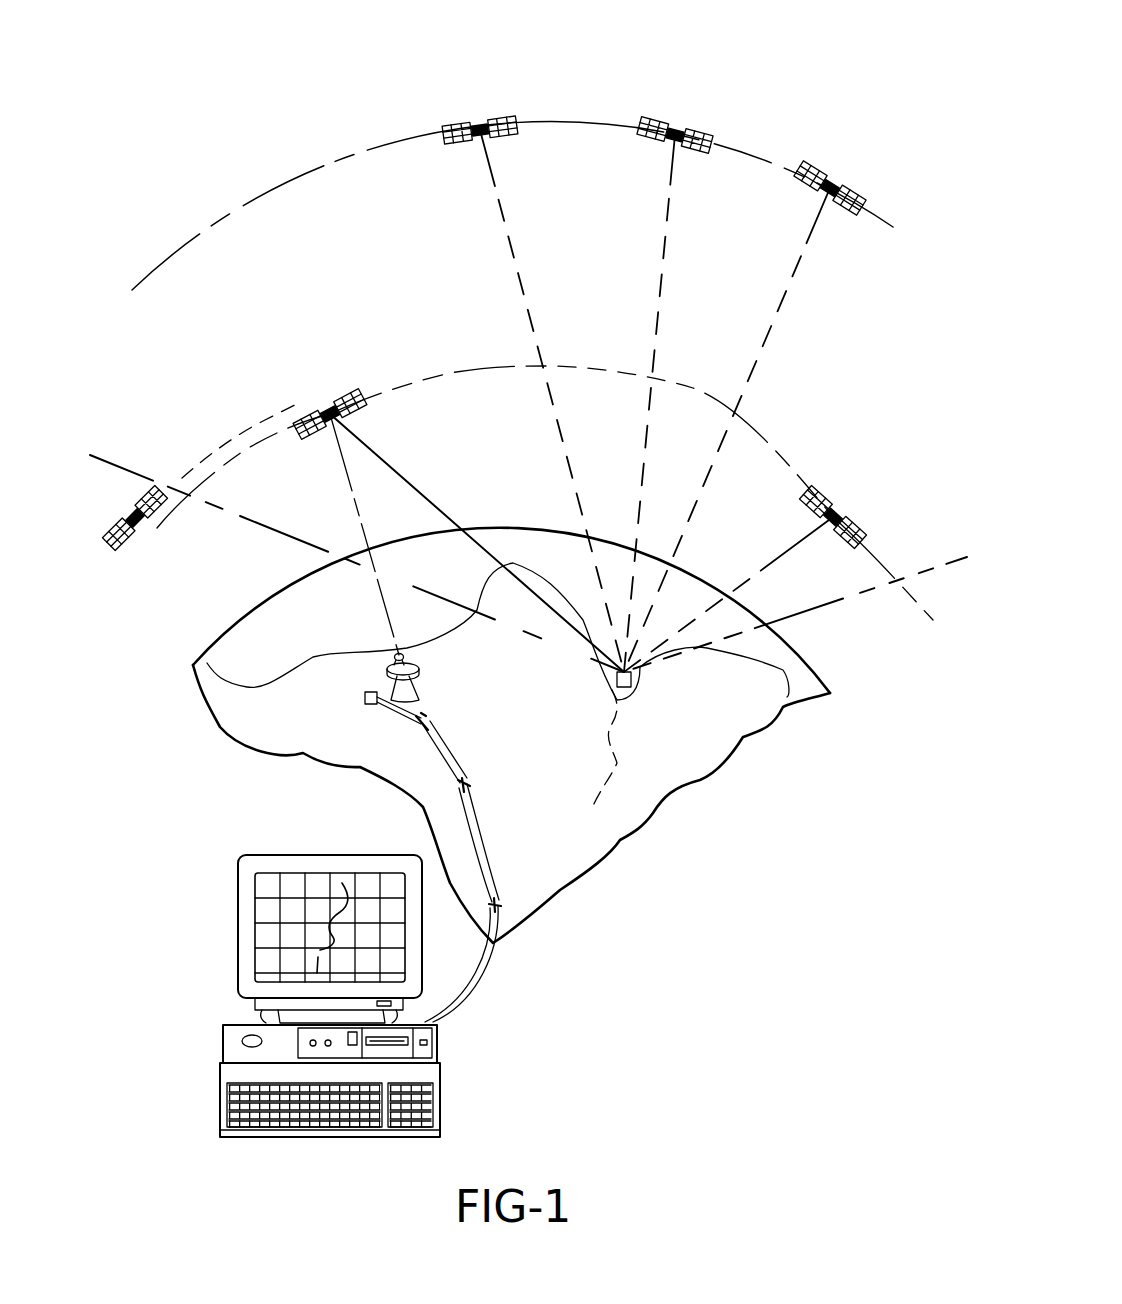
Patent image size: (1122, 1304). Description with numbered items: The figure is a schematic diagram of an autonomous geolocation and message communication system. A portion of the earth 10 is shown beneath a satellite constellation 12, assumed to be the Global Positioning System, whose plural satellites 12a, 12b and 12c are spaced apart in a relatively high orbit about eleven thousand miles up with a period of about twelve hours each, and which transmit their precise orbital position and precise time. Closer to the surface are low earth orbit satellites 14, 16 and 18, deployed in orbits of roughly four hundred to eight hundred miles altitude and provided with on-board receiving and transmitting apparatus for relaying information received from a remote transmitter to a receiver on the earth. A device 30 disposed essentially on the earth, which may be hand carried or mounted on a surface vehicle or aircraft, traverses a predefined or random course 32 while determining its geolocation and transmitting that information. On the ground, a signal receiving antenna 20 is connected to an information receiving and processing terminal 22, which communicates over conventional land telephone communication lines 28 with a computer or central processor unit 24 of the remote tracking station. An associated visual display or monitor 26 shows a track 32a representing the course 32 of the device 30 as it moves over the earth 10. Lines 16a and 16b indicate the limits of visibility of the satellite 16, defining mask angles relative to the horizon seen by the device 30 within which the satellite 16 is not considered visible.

The earth 10 is at (809, 668).
The satellite constellation 12 is at (806, 98).
The satellite 12a is at (497, 139).
The satellite 12b is at (681, 152).
The satellite 12c is at (841, 190).
The low earth orbit satellite 14 is at (840, 503).
The low earth orbit satellite 16 is at (313, 413).
The line of visibility 16a is at (240, 516).
The line of visibility 16b is at (826, 604).
The low earth orbit satellite 18 is at (118, 531).
The signal receiving antenna 20 is at (422, 662).
The information receiving and processing terminal 22 is at (371, 705).
The central processor unit 24 is at (338, 976).
The monitor 26 is at (288, 919).
The land telephone communication lines 28 is at (452, 752).
The device 30 is at (616, 685).
The course 32 is at (620, 742).
The track 32a is at (288, 922).